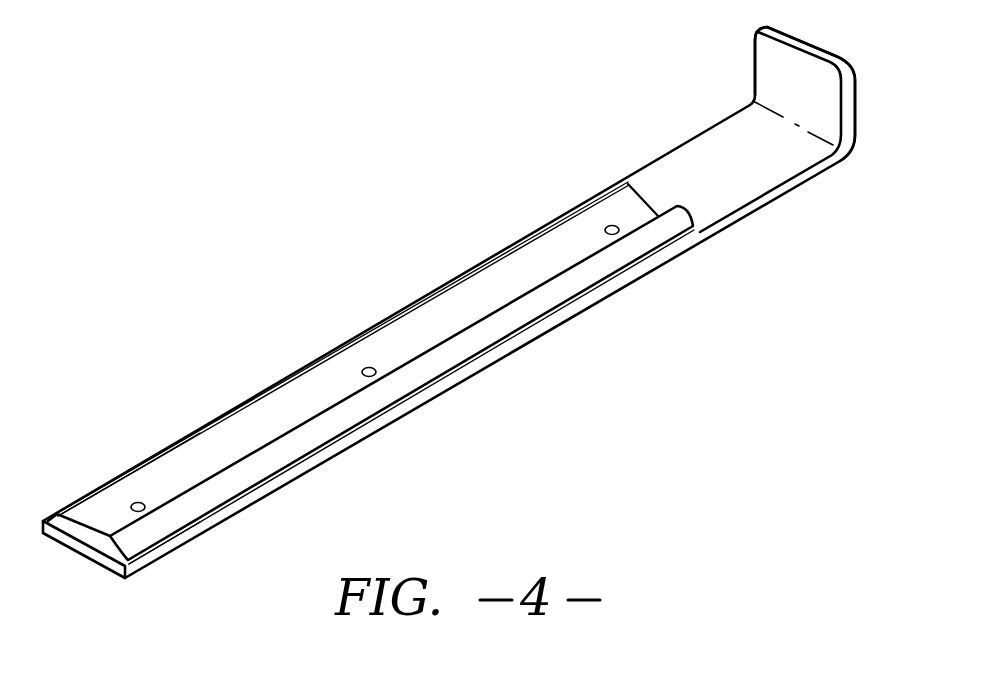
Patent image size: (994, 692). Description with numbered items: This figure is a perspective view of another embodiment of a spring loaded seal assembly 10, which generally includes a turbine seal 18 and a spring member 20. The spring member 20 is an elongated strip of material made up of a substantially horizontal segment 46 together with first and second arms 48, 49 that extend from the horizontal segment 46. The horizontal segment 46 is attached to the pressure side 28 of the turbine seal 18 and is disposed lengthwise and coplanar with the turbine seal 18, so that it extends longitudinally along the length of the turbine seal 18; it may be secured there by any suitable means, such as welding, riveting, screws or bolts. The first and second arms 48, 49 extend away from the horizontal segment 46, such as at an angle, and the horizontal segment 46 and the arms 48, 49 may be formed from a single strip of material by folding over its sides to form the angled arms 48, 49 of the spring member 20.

The spring loaded seal assembly 10 is at (358, 240).
The turbine seal 18 is at (697, 128).
The spring member 20 is at (505, 318).
The pressure side 28 is at (733, 182).
The horizontal segment 46 is at (92, 527).
The first arm 48 is at (95, 493).
The second arm 49 is at (165, 521).